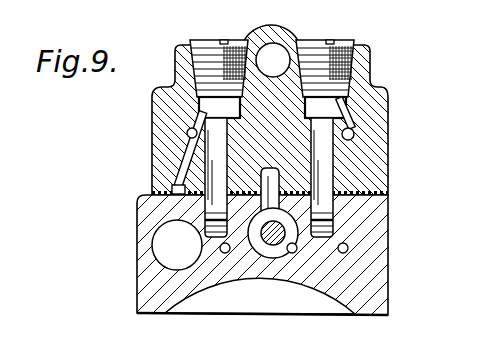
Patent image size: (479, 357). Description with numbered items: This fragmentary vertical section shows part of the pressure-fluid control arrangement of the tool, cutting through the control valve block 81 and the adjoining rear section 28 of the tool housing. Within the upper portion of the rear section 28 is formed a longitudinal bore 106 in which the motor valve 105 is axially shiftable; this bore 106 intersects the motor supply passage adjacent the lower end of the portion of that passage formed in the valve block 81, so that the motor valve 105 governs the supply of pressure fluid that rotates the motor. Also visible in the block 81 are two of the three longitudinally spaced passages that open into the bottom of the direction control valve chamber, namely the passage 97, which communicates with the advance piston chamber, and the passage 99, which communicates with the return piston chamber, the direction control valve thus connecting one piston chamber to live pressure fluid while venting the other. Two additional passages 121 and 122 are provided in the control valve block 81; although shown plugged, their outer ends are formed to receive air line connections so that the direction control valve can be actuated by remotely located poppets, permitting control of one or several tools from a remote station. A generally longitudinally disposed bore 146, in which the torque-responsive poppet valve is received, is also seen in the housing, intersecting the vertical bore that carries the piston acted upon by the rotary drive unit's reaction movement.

The block 81 is at (377, 163).
The rear section 28 is at (370, 218).
The longitudinally disposed bore 146 is at (152, 247).
The motor valve 105 is at (272, 244).
The longitudinal bore 106 is at (293, 254).
The passage 97 is at (225, 254).
The passage 99 is at (348, 250).
The passage 121 is at (350, 125).
The passage 122 is at (185, 163).